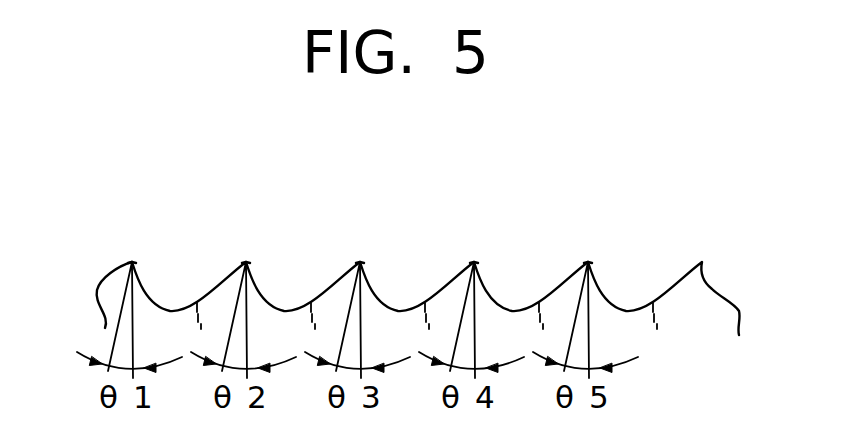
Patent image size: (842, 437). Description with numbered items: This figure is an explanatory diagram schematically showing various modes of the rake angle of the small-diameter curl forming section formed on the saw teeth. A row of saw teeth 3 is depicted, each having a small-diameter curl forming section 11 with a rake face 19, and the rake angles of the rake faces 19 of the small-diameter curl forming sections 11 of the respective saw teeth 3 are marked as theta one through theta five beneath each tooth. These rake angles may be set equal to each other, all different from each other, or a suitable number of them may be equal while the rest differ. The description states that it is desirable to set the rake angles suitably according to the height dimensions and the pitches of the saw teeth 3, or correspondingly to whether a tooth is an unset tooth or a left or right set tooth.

The saw tooth 3 is at (697, 300).
The small-diameter curl forming section 11 is at (632, 280).
The rake face 19 is at (588, 262).